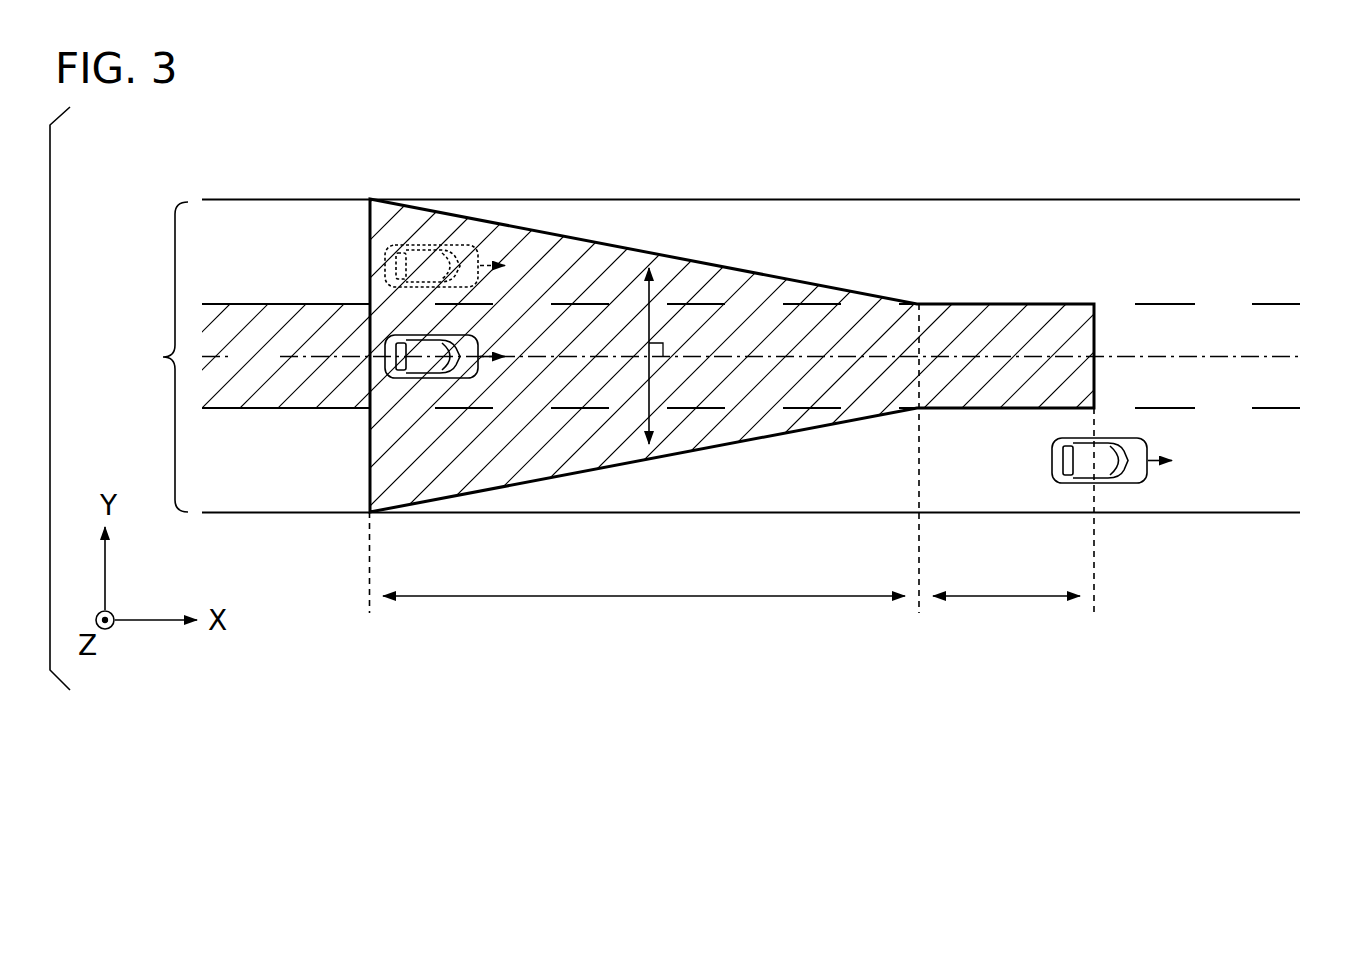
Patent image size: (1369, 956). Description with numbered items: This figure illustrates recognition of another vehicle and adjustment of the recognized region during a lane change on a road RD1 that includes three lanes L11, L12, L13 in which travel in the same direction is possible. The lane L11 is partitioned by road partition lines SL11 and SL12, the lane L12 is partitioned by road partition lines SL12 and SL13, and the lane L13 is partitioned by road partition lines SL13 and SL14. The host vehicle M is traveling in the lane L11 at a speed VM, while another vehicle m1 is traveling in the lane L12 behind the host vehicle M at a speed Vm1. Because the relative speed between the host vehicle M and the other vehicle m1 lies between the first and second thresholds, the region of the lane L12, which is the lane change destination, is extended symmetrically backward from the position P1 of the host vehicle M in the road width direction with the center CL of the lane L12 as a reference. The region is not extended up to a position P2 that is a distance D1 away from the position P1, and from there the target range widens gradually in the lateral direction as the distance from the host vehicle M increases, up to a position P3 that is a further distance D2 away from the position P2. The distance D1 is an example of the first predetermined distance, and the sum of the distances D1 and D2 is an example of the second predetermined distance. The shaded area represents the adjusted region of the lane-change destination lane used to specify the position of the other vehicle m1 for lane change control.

The road partition line SL14 is at (1284, 199).
The road partition line SL13 is at (1284, 304).
The road partition line SL12 is at (1275, 408).
The road partition line SL11 is at (1284, 512).
The center of lane CL is at (1270, 356).
The lane L13 is at (275, 268).
The lane L12 is at (275, 372).
The lane L11 is at (275, 476).
The road RD1 is at (150, 357).
The other vehicle m1 is at (430, 245).
The speed of other vehicle Vm1 is at (492, 262).
The host vehicle M is at (1050, 460).
The speed of host vehicle VM is at (1157, 463).
The position P3 is at (370, 579).
The position P2 is at (920, 475).
The position of host vehicle P1 is at (1094, 527).
The distance D2 is at (645, 597).
The distance D1 is at (1005, 597).